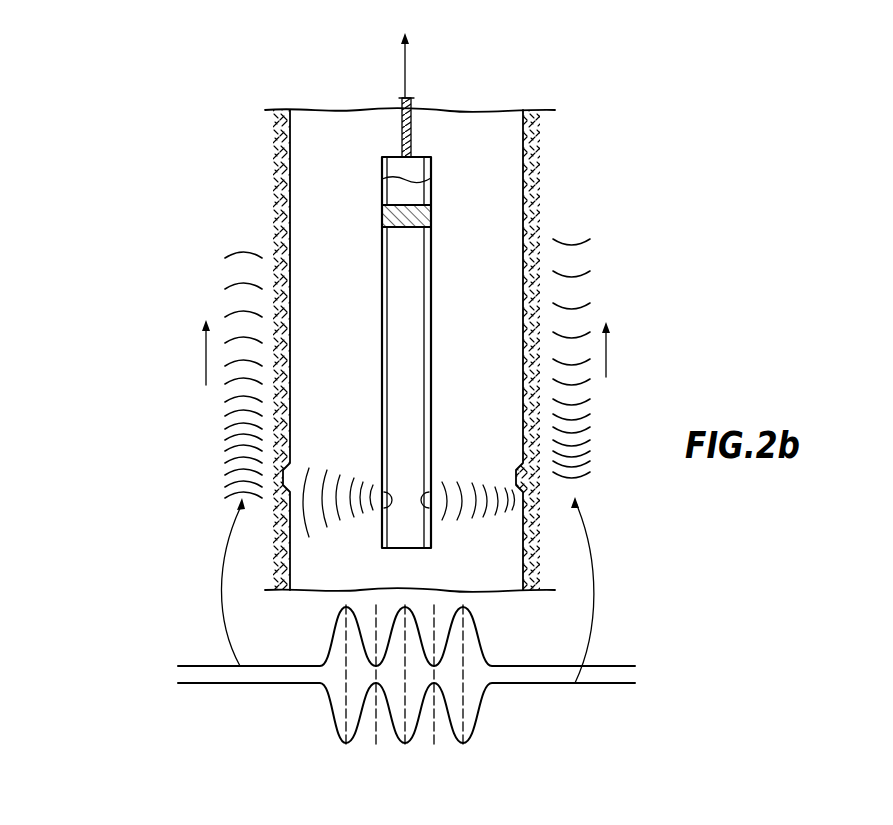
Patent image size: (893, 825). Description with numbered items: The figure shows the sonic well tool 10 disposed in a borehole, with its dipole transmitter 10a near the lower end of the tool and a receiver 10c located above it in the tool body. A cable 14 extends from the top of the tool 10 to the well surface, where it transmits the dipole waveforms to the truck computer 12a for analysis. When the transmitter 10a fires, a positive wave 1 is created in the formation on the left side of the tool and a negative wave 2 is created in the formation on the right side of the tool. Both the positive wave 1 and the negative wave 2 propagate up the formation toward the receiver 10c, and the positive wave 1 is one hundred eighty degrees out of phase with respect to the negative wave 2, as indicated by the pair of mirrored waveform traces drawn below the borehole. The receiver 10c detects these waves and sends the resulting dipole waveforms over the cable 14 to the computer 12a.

The computer 12a is at (448, 50).
The cable 14 is at (407, 87).
The sonic well tool 10 is at (431, 303).
The receiver 10c is at (430, 221).
The transmitter 10a is at (429, 490).
The positive wave 1 is at (426, 638).
The negative wave 2 is at (426, 708).